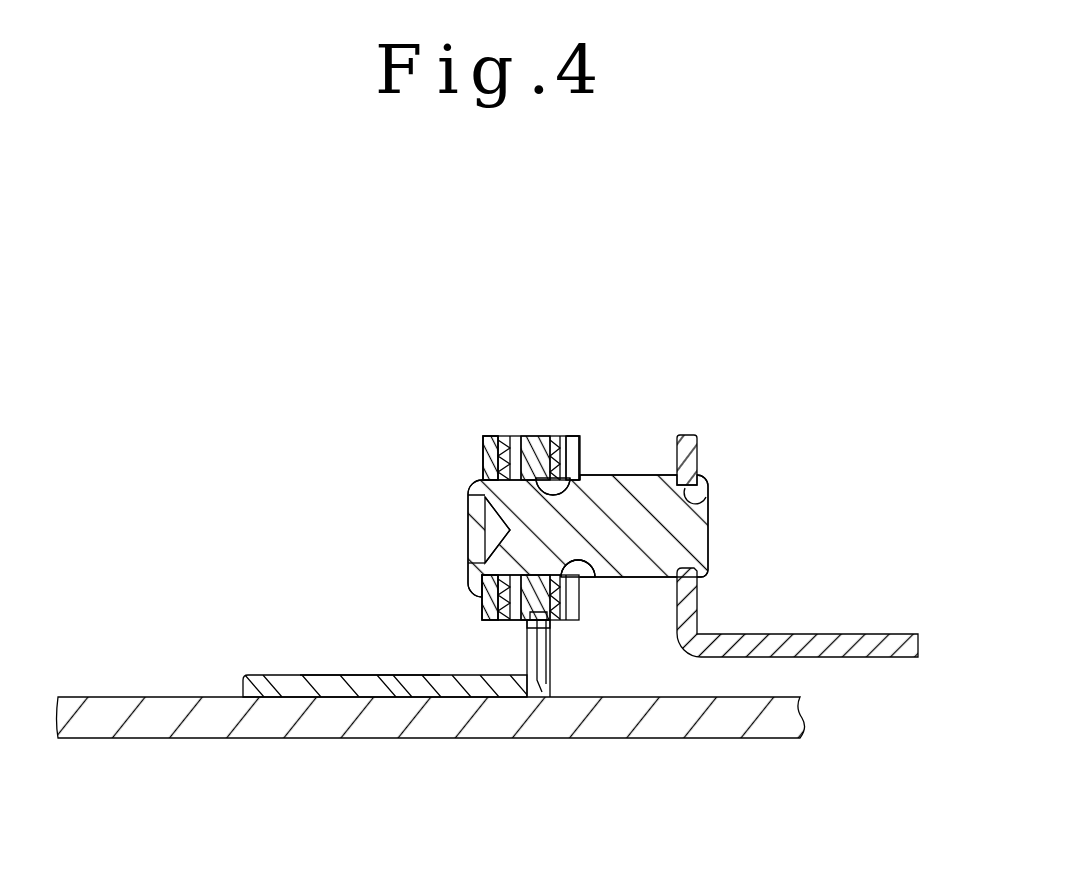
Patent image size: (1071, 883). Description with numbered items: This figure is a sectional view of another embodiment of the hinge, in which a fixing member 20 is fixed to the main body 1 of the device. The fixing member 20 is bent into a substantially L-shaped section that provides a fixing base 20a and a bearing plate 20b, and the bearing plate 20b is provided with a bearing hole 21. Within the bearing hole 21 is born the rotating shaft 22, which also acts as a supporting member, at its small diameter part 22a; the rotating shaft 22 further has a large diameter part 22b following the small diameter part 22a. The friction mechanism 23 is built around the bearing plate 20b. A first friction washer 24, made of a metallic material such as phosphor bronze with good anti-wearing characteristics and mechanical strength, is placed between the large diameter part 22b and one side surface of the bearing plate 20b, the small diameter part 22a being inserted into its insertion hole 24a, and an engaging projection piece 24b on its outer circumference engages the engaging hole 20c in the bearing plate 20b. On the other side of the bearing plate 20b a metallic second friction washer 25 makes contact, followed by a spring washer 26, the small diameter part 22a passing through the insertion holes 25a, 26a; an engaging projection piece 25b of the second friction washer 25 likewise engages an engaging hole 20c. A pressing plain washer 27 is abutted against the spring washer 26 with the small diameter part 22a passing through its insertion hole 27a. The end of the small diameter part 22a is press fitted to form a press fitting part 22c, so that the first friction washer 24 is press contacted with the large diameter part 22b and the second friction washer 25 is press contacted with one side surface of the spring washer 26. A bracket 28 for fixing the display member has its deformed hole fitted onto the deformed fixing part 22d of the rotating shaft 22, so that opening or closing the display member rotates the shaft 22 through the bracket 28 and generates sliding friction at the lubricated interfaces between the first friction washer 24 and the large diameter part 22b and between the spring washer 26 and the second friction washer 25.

The mounting panel 1 is at (172, 697).
The fixing member 20 is at (477, 678).
The fixing base 20a is at (378, 687).
The bearing plate 20b is at (552, 622).
The engaging hole 20c is at (538, 682).
The bearing hole 21 is at (571, 437).
The rotating shaft 22 is at (591, 435).
The small diameter part 22a is at (475, 498).
The large diameter part 22b is at (587, 443).
The press fitting part 22c is at (470, 560).
The deformed fixing part 22d is at (710, 493).
The friction mechanism 23 is at (447, 433).
The first friction washer 24 is at (566, 437).
The insertion hole 24a is at (562, 558).
The engaging projection piece 24b is at (551, 619).
The second friction washer 25 is at (505, 437).
The insertion hole 25a is at (482, 598).
The engaging projection piece 25b is at (527, 643).
The spring washer 26 is at (486, 437).
The insertion hole 26a is at (482, 578).
The pressing plain washer 27 is at (480, 438).
The insertion hole 27a is at (458, 476).
The bracket 28 is at (793, 633).